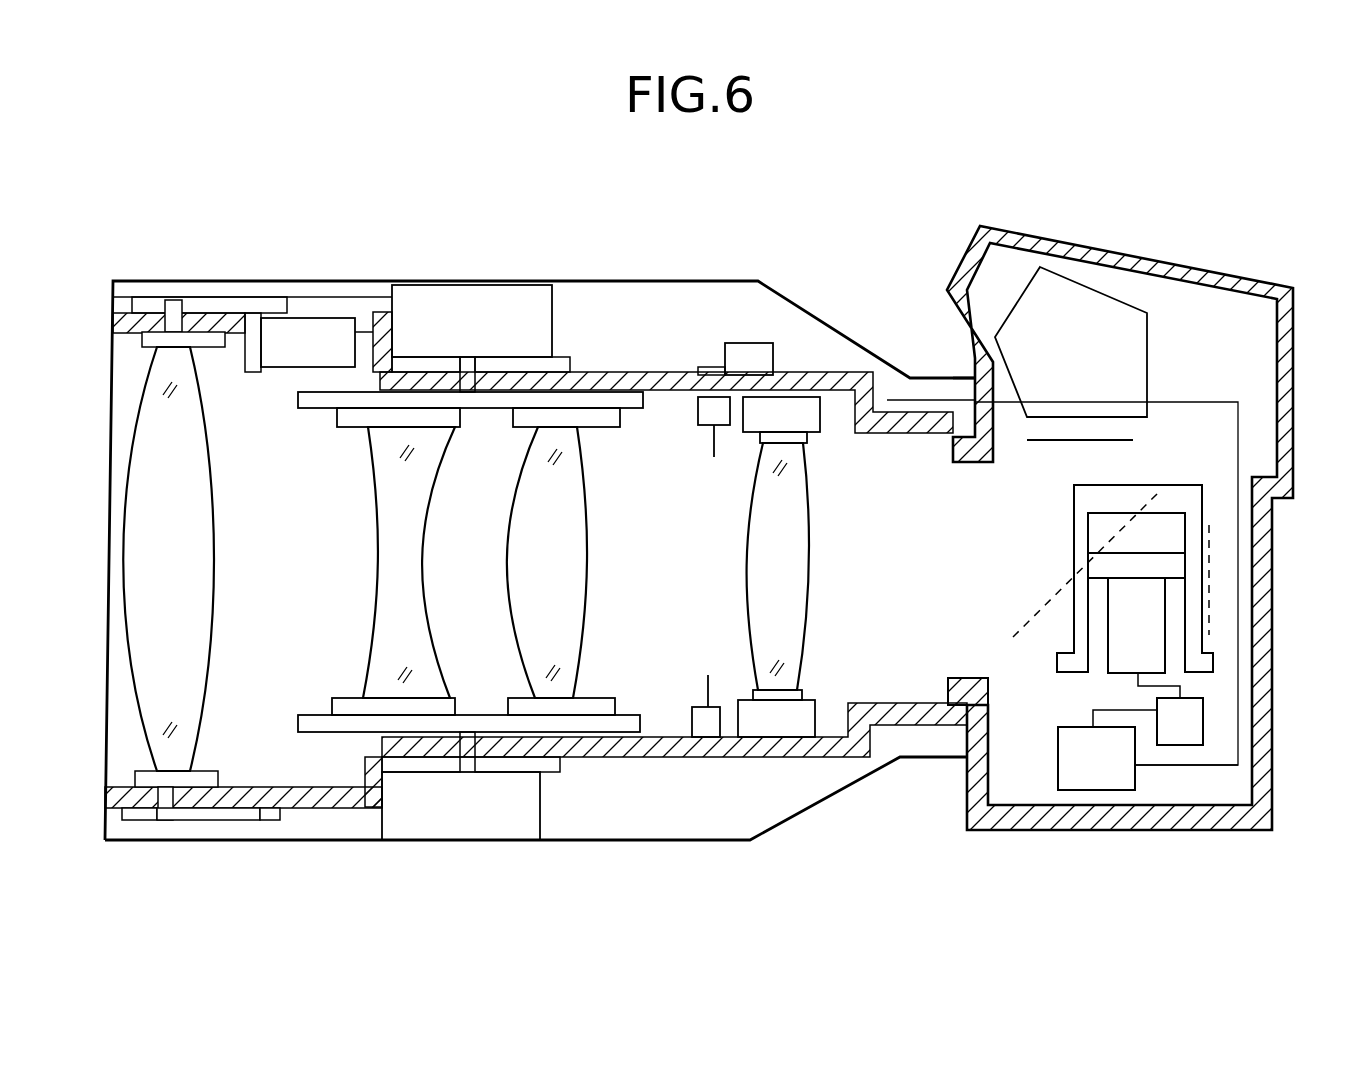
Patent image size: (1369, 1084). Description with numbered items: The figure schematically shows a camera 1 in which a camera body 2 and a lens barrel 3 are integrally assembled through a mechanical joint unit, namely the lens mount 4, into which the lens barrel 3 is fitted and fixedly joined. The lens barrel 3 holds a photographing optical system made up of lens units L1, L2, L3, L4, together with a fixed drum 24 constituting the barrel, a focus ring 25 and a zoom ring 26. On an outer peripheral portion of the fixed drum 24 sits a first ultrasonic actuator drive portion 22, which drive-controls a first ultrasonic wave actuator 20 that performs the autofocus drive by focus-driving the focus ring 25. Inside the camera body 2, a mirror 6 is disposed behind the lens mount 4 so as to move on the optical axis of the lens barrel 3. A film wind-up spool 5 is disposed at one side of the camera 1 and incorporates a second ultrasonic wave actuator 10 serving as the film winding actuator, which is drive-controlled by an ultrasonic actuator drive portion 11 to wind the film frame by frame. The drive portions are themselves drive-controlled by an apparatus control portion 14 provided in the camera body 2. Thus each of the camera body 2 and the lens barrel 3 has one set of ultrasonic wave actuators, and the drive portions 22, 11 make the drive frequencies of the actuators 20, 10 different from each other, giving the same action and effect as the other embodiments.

The camera 1 is at (1118, 228).
The camera body 2 is at (1293, 404).
The lens barrel 3 is at (629, 845).
The lens mount 4 is at (973, 700).
The film wind-up spool 5 is at (1193, 543).
The mirror 6 is at (1045, 603).
The ultrasonic wave actuator 10 is at (1152, 603).
The ultrasonic actuator drive portion 11 is at (1193, 722).
The apparatus control portion 14 is at (1092, 790).
The first ultrasonic wave actuator 20 is at (318, 328).
The first ultrasonic actuator drive portion 22 is at (770, 343).
The fixed drum 24 is at (340, 795).
The focus ring 25 is at (206, 300).
The zoom ring 26 is at (498, 365).
The lens unit L1 is at (206, 573).
The lens unit L2 is at (383, 592).
The lens unit L3 is at (583, 600).
The lens unit L4 is at (803, 603).